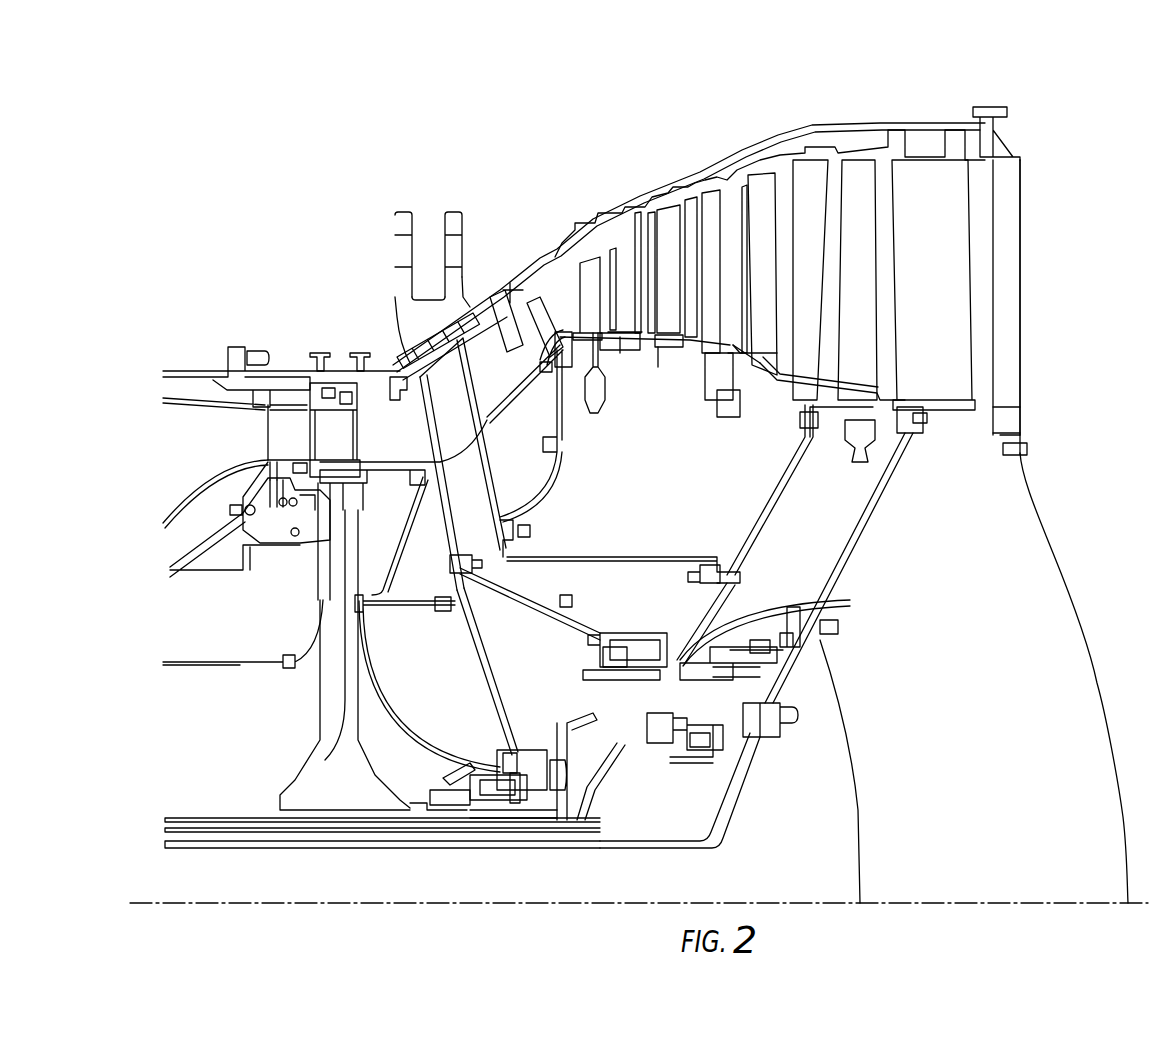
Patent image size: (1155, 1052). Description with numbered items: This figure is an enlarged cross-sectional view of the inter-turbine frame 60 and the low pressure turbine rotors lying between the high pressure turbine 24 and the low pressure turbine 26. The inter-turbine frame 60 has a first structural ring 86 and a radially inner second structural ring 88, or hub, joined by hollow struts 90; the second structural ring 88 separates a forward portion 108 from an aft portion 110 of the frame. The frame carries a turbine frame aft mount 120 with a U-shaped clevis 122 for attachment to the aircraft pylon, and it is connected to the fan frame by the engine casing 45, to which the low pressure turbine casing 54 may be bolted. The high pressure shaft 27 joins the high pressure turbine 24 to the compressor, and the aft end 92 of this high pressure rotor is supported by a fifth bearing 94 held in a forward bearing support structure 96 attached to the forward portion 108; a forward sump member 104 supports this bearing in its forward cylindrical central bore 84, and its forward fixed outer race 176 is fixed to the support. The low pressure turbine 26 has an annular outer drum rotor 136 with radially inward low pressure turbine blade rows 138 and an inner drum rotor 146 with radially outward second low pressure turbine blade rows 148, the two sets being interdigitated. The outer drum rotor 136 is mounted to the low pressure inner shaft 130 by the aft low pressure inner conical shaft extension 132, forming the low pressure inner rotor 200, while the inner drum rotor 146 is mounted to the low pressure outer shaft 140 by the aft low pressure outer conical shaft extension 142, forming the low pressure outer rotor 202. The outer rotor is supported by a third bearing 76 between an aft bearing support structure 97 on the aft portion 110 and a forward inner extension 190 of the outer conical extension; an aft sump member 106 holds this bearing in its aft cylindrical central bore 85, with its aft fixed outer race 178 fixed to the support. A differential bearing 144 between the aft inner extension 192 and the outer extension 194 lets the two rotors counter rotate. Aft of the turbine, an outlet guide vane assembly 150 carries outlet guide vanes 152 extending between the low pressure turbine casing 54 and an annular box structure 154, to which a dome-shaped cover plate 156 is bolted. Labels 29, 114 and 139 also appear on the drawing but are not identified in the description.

The high pressure turbine 24 is at (332, 427).
The low pressure turbine 26 is at (953, 91).
The high pressure shaft 27 is at (212, 660).
The inlet flow path 29 is at (247, 667).
The engine casing 45 is at (287, 367).
The low pressure turbine casing 54 is at (927, 177).
The inter-turbine frame 60 is at (440, 557).
The third bearing 76 is at (620, 667).
The forward cylindrical central bore 84 is at (475, 793).
The aft cylindrical central bore 85 is at (600, 657).
The first structural ring 86 is at (427, 363).
The second structural ring 88 is at (470, 570).
The struts 90 is at (500, 473).
The aft end of the high pressure rotor 92 is at (533, 820).
The fifth bearing 94 is at (533, 790).
The forward bearing support structure 96 is at (500, 730).
The aft bearing support structure 97 is at (600, 593).
The forward sump member 104 is at (507, 760).
The aft sump member 106 is at (615, 583).
The forward portion of the inter-turbine frame 108 is at (455, 620).
The aft portion of the inter-turbine frame 110 is at (520, 577).
The stator vane 114 is at (400, 448).
The turbine frame aft mount 120 is at (403, 290).
The U-shaped clevis 122 is at (445, 228).
The low pressure inner shaft 130 is at (663, 850).
The aft low pressure inner conical shaft extension 132 is at (863, 533).
The outer drum rotor 136 is at (653, 245).
The low pressure turbine blade rows 138 is at (808, 185).
The last stage blade 139 is at (970, 227).
The low pressure outer shaft 140 is at (233, 830).
The aft low pressure outer conical shaft extension 142 is at (785, 490).
The differential bearing 144 is at (780, 667).
The low pressure inner drum rotor 146 is at (785, 395).
The second low pressure turbine blade rows 148 is at (770, 383).
The outlet guide vane assembly 150 is at (1047, 264).
The outlet guide vanes 152 is at (1022, 292).
The annular box structure 154 is at (1010, 420).
The dome-shaped cover plate 156 is at (1077, 620).
The forward fixed outer race 176 is at (508, 747).
The aft fixed outer race 178 is at (617, 633).
The forward inner extension 190 is at (643, 677).
The aft inner extension 192 is at (790, 607).
The outer extension 194 is at (813, 640).
The low pressure inner rotor 200 is at (320, 843).
The low pressure outer rotor 202 is at (357, 827).